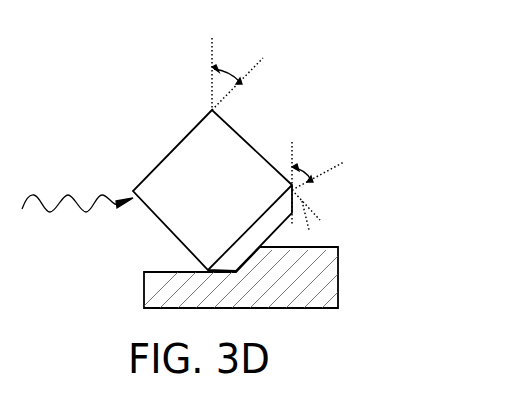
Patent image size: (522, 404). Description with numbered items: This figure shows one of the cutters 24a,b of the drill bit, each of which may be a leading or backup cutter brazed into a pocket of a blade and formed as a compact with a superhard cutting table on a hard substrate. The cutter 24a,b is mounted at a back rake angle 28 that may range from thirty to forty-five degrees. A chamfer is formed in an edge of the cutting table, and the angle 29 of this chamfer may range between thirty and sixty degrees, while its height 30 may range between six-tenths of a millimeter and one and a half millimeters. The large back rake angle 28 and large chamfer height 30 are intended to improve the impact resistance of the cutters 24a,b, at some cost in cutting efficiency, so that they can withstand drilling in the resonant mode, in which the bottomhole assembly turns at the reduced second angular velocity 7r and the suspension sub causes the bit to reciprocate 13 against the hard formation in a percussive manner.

The cutters 24a,b is at (74, 47).
The back rake angle 28 is at (228, 73).
The chamfer angle 29 is at (309, 171).
The chamfer height 30 is at (305, 214).
The second angular velocity 7r is at (67, 193).
The reciprocation 13 is at (67, 193).